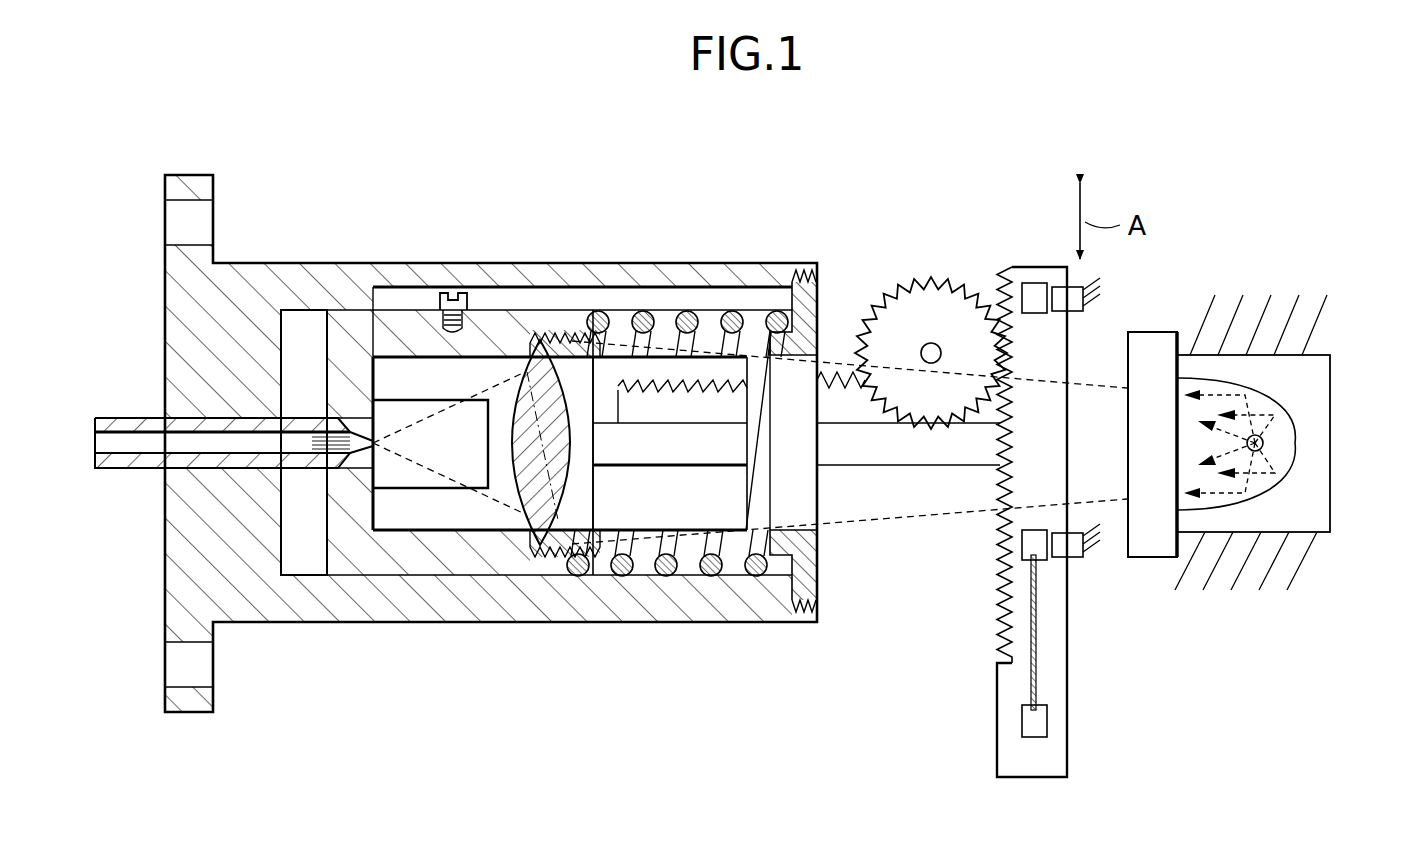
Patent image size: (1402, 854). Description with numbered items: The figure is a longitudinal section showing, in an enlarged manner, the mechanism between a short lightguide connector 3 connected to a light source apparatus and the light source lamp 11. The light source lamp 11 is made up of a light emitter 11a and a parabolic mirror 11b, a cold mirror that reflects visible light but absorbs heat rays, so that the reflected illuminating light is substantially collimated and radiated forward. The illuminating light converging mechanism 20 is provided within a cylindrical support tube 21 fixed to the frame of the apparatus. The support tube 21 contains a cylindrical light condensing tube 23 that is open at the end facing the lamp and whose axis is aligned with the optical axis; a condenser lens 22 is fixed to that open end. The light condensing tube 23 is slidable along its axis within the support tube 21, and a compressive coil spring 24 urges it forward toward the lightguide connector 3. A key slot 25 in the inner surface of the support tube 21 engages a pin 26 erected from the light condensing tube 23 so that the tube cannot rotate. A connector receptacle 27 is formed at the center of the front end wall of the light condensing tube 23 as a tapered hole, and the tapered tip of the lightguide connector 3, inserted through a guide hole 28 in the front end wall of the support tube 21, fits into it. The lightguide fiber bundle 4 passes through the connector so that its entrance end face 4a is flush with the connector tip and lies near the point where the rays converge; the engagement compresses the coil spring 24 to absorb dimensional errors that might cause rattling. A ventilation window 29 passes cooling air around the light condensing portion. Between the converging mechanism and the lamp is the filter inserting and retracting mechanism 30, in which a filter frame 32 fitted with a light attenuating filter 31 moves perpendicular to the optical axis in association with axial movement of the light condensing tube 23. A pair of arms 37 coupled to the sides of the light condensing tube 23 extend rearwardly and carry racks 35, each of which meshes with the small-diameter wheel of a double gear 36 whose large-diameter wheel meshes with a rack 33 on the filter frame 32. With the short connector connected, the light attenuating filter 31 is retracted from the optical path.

The lightguide connector 3 is at (135, 470).
The lightguide fiber bundle 4 is at (125, 437).
The entrance end face 4a is at (380, 462).
The light source lamp 11 is at (1285, 505).
The light emitter 11a is at (1263, 443).
The parabolic mirror 11b is at (1217, 373).
The illuminating light converging mechanism 20 is at (620, 242).
The support tube 21 is at (425, 600).
The condenser lens 22 is at (516, 530).
The light condensing tube 23 is at (357, 565).
The compressive coil spring 24 is at (692, 316).
The key slot 25 is at (525, 287).
The pin 26 is at (455, 298).
The connector receptacle 27 is at (355, 415).
The guide hole 28 is at (210, 410).
The ventilation window 29 is at (407, 398).
The filter inserting and retracting mechanism 30 is at (982, 260).
The light attenuating filter 31 is at (1031, 690).
The filter frame 32 is at (1075, 718).
The rack 33 is at (1003, 620).
The rack 35 is at (840, 390).
The double gear 36 is at (935, 310).
The arm 37 is at (670, 455).